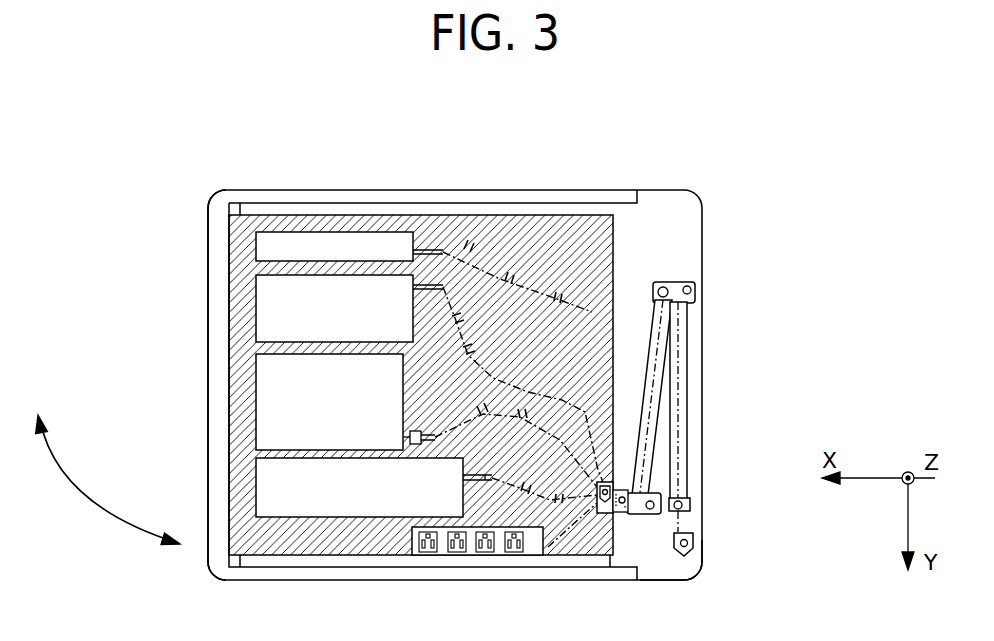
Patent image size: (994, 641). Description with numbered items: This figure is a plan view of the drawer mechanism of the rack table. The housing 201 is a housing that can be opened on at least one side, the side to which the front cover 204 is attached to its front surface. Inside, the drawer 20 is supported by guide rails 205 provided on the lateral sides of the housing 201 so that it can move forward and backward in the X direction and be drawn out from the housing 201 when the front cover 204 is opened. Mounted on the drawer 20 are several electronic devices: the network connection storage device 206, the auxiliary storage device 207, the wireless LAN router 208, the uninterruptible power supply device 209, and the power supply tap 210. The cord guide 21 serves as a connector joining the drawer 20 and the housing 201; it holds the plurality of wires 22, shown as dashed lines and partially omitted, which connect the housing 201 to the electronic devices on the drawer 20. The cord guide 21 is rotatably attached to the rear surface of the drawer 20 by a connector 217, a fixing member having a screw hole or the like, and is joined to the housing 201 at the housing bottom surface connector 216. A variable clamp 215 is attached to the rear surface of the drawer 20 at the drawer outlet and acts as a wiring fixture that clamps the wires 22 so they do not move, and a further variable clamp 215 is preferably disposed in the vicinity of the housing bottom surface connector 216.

The drawer 20 is at (553, 353).
The cord guide 21 is at (705, 399).
The wires 22 is at (494, 273).
The housing 201 is at (700, 563).
The front cover 204 is at (210, 575).
The guide rails 205 is at (605, 210).
The network connection storage device 206 is at (358, 259).
The auxiliary storage device 207 is at (358, 318).
The wireless LAN router 208 is at (353, 417).
The uninterruptible power supply device 209 is at (382, 497).
The power supply tap 210 is at (548, 548).
The variable clamp 215 is at (605, 483).
The housing bottom surface connector 216 is at (693, 503).
The connector 217 is at (618, 513).